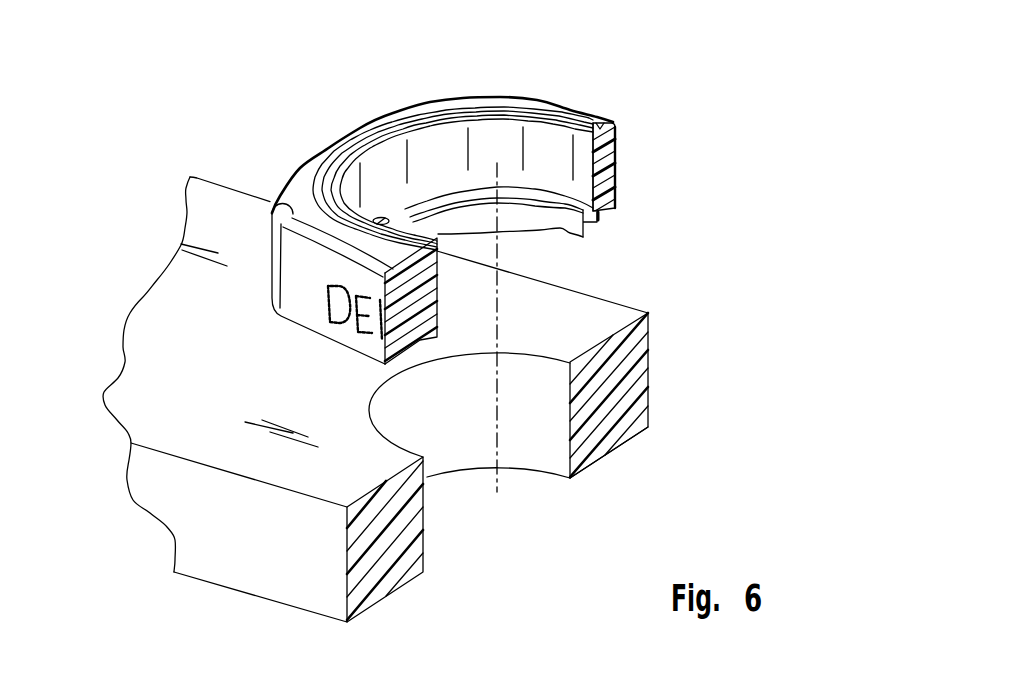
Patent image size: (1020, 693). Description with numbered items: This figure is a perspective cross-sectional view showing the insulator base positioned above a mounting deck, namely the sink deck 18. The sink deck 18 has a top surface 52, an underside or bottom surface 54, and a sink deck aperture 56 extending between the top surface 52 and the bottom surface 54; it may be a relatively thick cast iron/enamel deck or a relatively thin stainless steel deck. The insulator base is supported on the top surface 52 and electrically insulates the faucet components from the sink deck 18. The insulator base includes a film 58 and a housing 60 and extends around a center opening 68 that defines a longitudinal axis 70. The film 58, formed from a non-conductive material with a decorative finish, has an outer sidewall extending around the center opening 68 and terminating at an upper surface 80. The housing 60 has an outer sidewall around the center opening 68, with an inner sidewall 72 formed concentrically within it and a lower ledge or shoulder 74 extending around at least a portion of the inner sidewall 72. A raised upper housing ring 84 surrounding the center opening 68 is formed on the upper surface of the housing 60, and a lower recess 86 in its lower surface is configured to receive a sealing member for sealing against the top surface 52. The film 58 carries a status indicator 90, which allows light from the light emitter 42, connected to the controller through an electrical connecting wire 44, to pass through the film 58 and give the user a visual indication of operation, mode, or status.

The sink deck 18 is at (168, 313).
The light emitter 42 is at (423, 292).
The electrical connecting wire 44 is at (443, 288).
The top surface 52 is at (620, 317).
The bottom surface 54 is at (630, 440).
The sink deck aperture 56 is at (450, 445).
The film 58 is at (617, 152).
The housing 60 is at (600, 218).
The center opening 68 is at (488, 144).
The longitudinal axis 70 is at (497, 491).
The inner sidewall 72 is at (349, 176).
The lower ledge or shoulder 74 is at (436, 200).
The upper surface 80 is at (603, 126).
The raised upper housing ring 84 is at (539, 112).
The lower recess 86 is at (591, 226).
The status indicator 90 is at (321, 320).